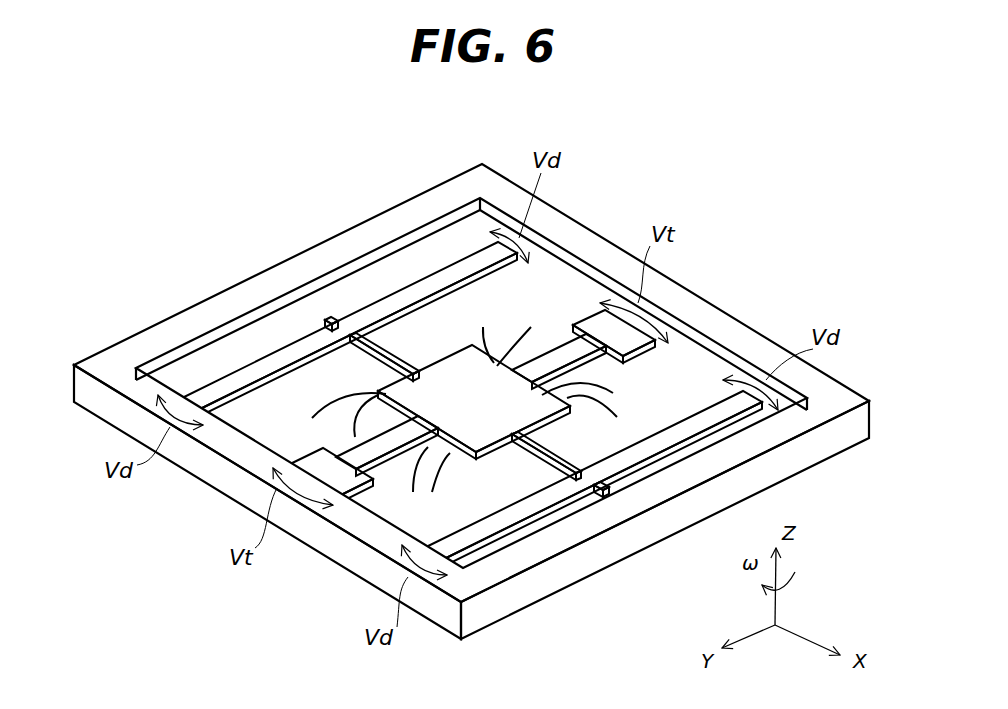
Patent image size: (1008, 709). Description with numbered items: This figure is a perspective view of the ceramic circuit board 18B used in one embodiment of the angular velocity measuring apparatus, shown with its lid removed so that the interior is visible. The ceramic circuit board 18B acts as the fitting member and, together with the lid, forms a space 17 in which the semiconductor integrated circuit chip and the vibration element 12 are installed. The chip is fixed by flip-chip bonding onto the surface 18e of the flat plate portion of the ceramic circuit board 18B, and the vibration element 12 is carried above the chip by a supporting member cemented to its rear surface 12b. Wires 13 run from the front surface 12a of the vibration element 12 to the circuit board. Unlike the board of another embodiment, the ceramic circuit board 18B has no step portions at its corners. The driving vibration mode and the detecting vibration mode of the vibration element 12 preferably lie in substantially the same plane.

The vibration element 12 is at (702, 366).
The front surface of the vibration element 12a is at (280, 345).
The rear surface of the vibration element 12b is at (373, 467).
The wires 13 is at (515, 332).
The space 17 is at (672, 403).
The ceramic circuit board 18B is at (477, 405).
The surface of the flat plate portion 18e is at (712, 360).